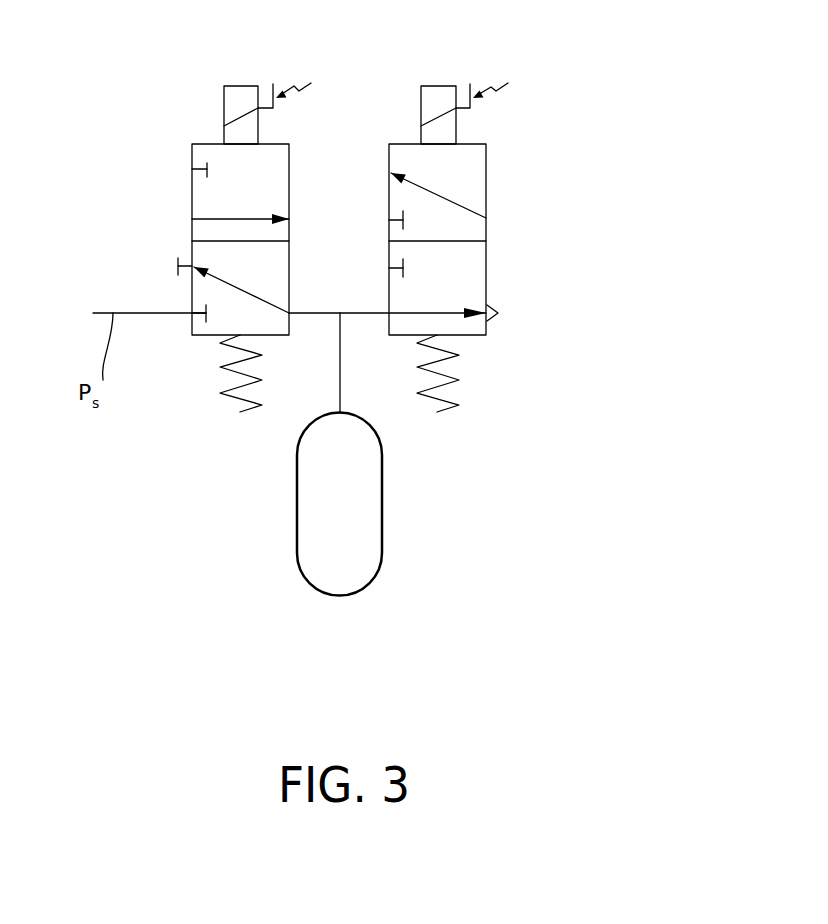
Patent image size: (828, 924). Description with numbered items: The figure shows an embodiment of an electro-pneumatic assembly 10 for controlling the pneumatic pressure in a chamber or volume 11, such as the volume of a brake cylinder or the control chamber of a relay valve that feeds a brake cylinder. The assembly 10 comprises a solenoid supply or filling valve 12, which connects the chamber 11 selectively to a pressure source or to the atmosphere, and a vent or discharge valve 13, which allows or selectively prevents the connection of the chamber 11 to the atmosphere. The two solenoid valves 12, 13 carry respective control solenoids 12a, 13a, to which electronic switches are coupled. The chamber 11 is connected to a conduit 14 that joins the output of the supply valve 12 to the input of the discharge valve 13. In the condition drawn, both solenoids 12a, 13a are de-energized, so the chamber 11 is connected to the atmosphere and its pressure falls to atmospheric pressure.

The electro-pneumatic assembly 10 is at (541, 141).
The chamber or volume 11 is at (363, 552).
The solenoid supply or filling valve 12 is at (192, 200).
The control solenoid 12a is at (224, 111).
The vent or discharge valve 13 is at (486, 198).
The control solenoid 13a is at (421, 111).
The conduit 14 is at (363, 312).